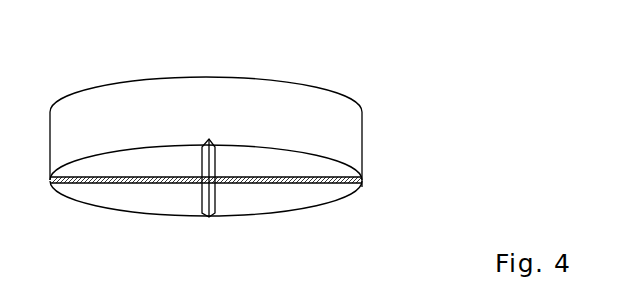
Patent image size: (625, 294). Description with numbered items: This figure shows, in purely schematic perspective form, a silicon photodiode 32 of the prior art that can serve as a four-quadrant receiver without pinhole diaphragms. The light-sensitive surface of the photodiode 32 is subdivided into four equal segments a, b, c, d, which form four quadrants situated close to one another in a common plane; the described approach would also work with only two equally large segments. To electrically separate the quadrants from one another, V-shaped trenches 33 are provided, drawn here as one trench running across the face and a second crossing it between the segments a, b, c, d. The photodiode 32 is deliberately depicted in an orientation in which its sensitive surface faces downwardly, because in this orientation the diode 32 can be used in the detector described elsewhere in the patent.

The photodiode 32 is at (54, 31).
The V-shaped trenches 33 is at (213, 146).
The segment a is at (128, 162).
The segment b is at (284, 162).
The segment c is at (284, 198).
The segment d is at (128, 198).